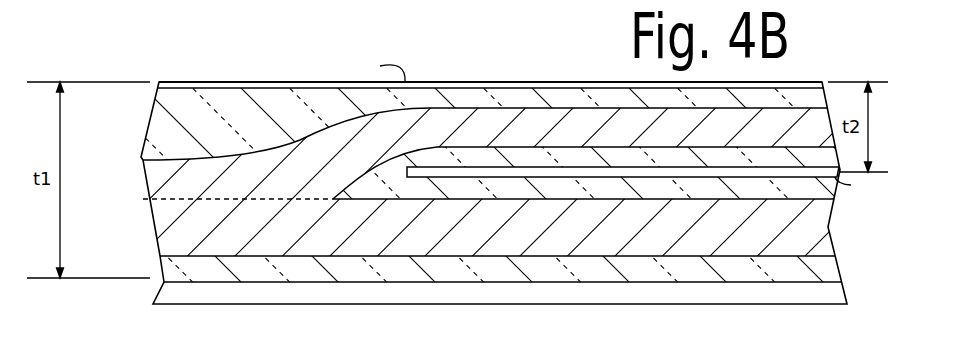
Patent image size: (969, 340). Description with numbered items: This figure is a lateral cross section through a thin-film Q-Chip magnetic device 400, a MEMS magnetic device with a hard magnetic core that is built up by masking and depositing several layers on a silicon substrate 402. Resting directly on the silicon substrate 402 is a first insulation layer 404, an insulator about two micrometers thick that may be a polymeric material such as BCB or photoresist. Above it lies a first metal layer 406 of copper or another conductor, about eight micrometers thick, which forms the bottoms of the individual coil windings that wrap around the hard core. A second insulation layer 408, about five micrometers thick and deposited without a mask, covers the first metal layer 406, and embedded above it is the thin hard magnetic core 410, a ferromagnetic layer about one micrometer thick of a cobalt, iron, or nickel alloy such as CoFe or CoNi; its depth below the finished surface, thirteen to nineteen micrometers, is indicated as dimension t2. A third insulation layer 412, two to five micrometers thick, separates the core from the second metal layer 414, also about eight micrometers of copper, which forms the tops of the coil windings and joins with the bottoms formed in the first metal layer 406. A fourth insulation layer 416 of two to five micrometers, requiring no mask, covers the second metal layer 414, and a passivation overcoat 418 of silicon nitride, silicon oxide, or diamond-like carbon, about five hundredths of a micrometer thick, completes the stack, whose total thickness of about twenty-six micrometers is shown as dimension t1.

The thin-film Q-Chip magnetic device 400 is at (221, 42).
The silicon substrate 402 is at (847, 292).
The first insulation layer (ins-1) 404 is at (838, 263).
The first metal layer (met-1) 406 is at (837, 228).
The second insulation layer (ins-2) 408 is at (556, 199).
The hard magnetic core (mag-1) 410 is at (645, 177).
The third insulation layer (ins-3) 412 is at (610, 147).
The second metal layer (met-2) 414 is at (560, 139).
The fourth insulation layer (ins-4) 416 is at (315, 124).
The passivation overcoat (psvn-1) 418 is at (500, 82).